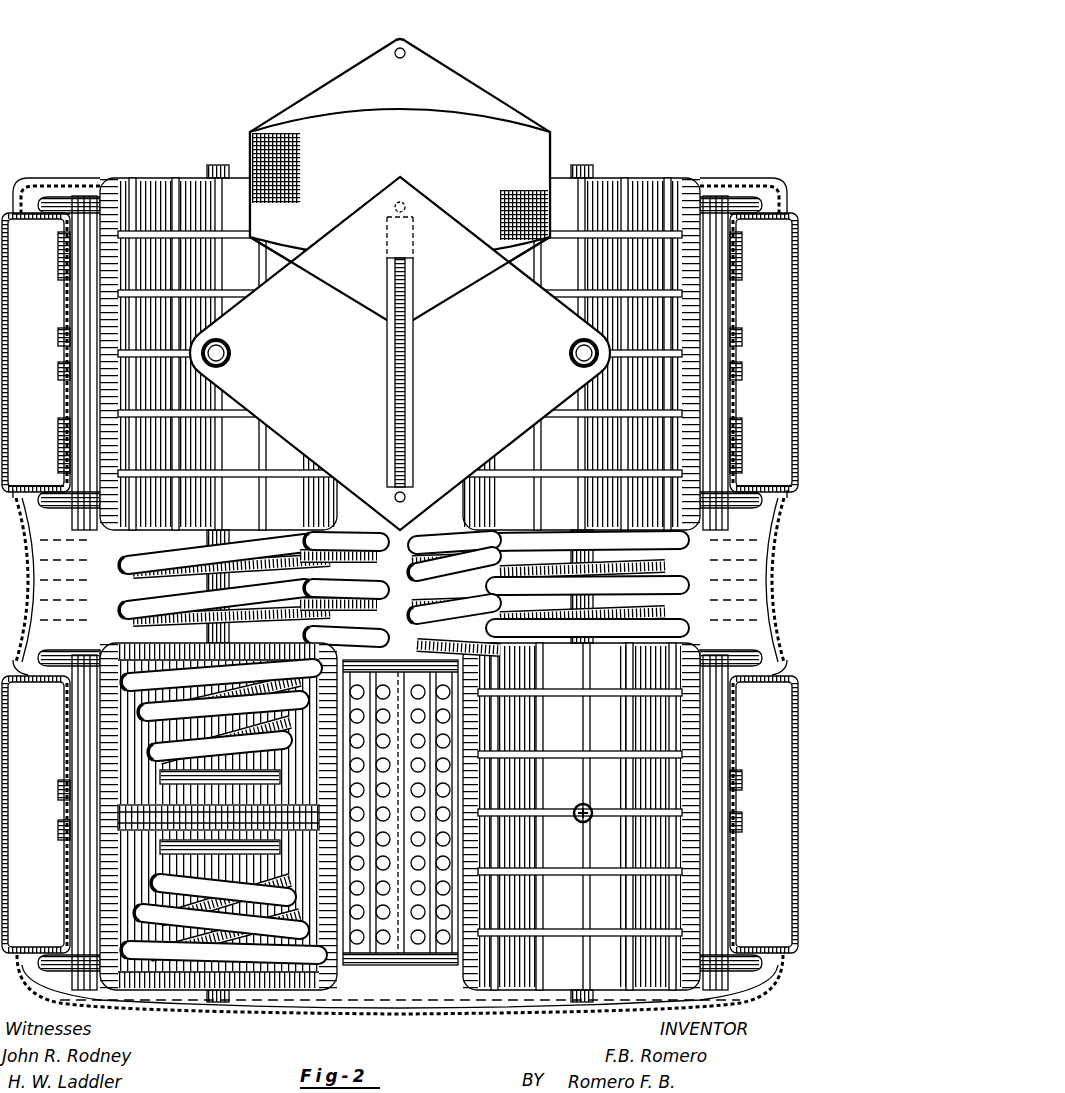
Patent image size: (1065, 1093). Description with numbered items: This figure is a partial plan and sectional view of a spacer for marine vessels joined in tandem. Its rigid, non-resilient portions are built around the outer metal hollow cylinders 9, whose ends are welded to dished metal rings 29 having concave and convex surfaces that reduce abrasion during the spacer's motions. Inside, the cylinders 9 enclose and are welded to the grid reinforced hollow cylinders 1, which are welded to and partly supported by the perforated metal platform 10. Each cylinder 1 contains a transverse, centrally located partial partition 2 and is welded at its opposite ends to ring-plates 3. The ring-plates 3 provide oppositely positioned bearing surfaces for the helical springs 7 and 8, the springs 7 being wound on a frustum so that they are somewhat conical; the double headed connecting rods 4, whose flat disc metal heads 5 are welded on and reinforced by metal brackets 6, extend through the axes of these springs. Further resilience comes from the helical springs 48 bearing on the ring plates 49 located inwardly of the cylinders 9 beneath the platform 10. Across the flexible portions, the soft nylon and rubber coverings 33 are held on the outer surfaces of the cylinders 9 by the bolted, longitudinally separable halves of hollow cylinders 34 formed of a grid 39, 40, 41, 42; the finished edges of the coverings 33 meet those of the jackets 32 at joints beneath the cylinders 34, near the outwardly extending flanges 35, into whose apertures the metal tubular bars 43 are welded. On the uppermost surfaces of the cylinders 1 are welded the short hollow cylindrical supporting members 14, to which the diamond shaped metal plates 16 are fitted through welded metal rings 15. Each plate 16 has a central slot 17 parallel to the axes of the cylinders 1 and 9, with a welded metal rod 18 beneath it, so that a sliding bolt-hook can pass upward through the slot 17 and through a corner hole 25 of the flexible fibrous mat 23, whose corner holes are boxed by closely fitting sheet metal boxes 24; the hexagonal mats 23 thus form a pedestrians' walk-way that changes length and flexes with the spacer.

The hollow cylinders 1 is at (130, 912).
The partial partition 2 is at (128, 822).
The ring-plates 3 is at (122, 646).
The double headed connecting rods 4 is at (218, 165).
The flat disc metal heads 5 is at (160, 776).
The metal brackets 6 is at (150, 736).
The helical springs 7 is at (135, 704).
The helical springs 8 is at (118, 568).
The metal hollow cylinders 9 is at (86, 198).
The perforated metal platform 10 is at (428, 950).
The short hollow cylindrical metal supporting structures 14 is at (220, 343).
The metal rings 15 is at (228, 350).
The diamond shaped metal plates 16 is at (300, 372).
The slot 17 is at (412, 350).
The metal rod 18 is at (405, 386).
The flexible fibrous mat 23 is at (545, 150).
The sheet metal boxes 24 is at (425, 62).
The corner hole 25 is at (406, 50).
The dished metal rings 29 is at (50, 197).
The jackets 32 is at (58, 352).
The covering 33 is at (28, 182).
The hollow grid formed cylinders 34 is at (58, 262).
The flanges 35 is at (14, 484).
The grid 39 is at (58, 790).
The grid 40 is at (58, 830).
The grid 41 is at (742, 830).
The grid 42 is at (742, 790).
The tubular bars 43 is at (8, 345).
The helical springs 48 is at (372, 566).
The ring plates 49 is at (404, 628).